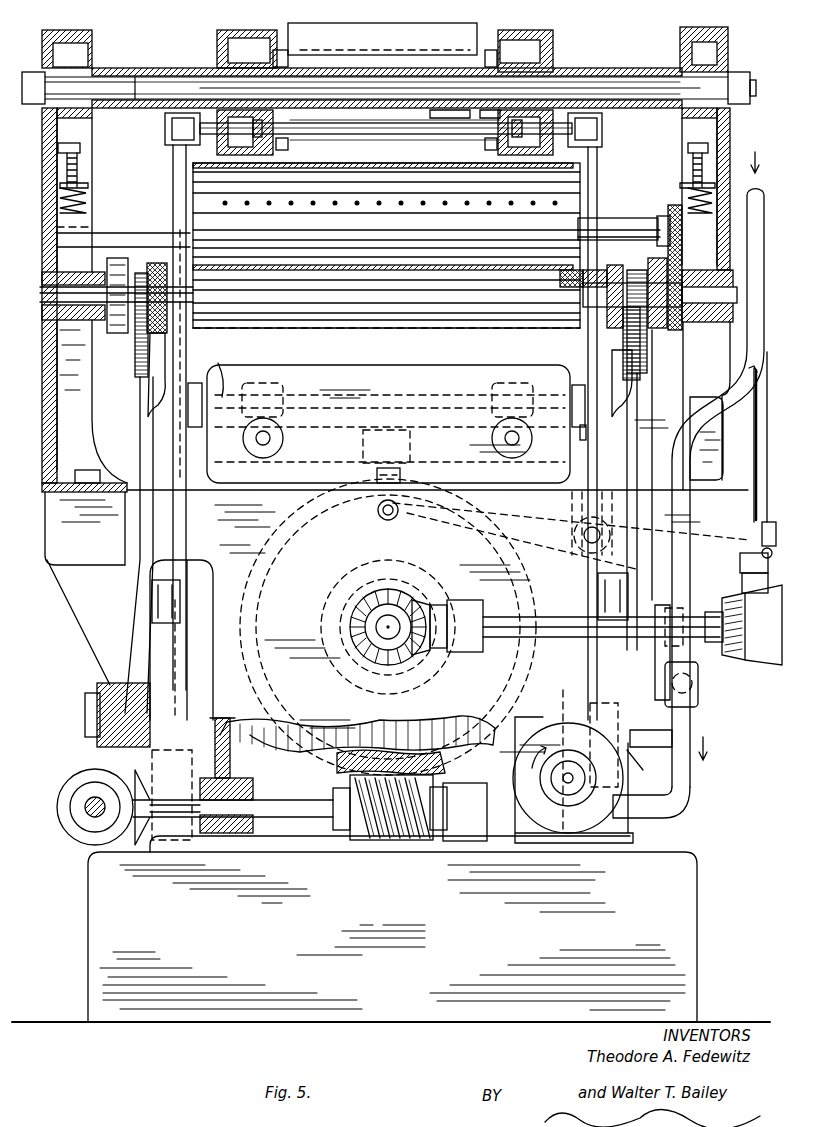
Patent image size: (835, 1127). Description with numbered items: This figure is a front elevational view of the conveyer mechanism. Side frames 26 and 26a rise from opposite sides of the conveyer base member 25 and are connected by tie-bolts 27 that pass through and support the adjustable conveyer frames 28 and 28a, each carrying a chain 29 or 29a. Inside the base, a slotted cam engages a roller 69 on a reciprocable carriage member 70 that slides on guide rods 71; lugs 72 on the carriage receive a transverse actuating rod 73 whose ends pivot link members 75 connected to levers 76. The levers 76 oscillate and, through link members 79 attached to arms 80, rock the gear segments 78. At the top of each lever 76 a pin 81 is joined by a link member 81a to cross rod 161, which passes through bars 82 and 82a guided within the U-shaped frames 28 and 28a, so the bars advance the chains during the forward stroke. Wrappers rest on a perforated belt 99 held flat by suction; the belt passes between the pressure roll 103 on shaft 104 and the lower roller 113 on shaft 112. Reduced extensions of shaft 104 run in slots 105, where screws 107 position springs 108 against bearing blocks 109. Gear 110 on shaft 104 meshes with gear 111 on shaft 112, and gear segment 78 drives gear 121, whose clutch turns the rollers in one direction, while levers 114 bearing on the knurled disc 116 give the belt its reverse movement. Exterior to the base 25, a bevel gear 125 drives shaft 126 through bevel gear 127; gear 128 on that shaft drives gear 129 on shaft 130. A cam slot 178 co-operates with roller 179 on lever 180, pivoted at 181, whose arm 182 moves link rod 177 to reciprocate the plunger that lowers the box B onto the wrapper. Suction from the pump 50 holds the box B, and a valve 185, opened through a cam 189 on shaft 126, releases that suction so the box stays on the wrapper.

The box B is at (375, 30).
The conveyer base member 25 is at (52, 535).
The side frame 26 is at (52, 165).
The side frame 26a is at (730, 118).
The tie-bolt 27 is at (95, 82).
The adjustable conveyer frame 28 is at (228, 30).
The adjustable conveyer frame 28a is at (553, 38).
The chain 29 is at (278, 55).
The chain 29a is at (500, 48).
The pump 50 is at (582, 825).
The roller 69 is at (400, 475).
The reciprocable carriage member 70 is at (430, 415).
The guide rod 71 is at (258, 438).
The lug 72 is at (262, 383).
The actuating rod 73 is at (222, 397).
The link member 75 is at (198, 383).
The lever 76 is at (173, 160).
The gear segment 78 is at (140, 373).
The link member 79 is at (152, 598).
The arm 80 is at (142, 450).
The pin 81 is at (165, 132).
The link member 81a is at (195, 120).
The bar 82 is at (305, 137).
The bar 82a is at (420, 137).
The belt 99 is at (330, 268).
The pressure roll 103 is at (565, 225).
The shaft 104 is at (612, 238).
The slot 105 is at (90, 202).
The screw 107 is at (80, 145).
The spring 108 is at (80, 185).
The bearing block 109 is at (105, 235).
The gear 110 is at (672, 245).
The gear 111 is at (640, 330).
The shaft 112 is at (595, 310).
The lower roller 113 is at (430, 305).
The lever 114 is at (150, 405).
The knurled disc 116 is at (110, 262).
The gear 121 is at (632, 275).
The bevel gear 125 is at (372, 585).
The shaft 126 is at (492, 620).
The bevel gear 127 is at (418, 600).
The gear 128 is at (735, 645).
The gear 129 is at (778, 610).
The shaft 130 is at (750, 490).
The cross rod 161 is at (395, 138).
The link rod 177 is at (768, 355).
The cam slot 178 is at (330, 603).
The roller 179 is at (378, 512).
The lever 180 is at (514, 523).
The pivot 181 is at (585, 550).
The arm 182 is at (740, 565).
The valve 185 is at (700, 690).
The cam 189 is at (668, 615).